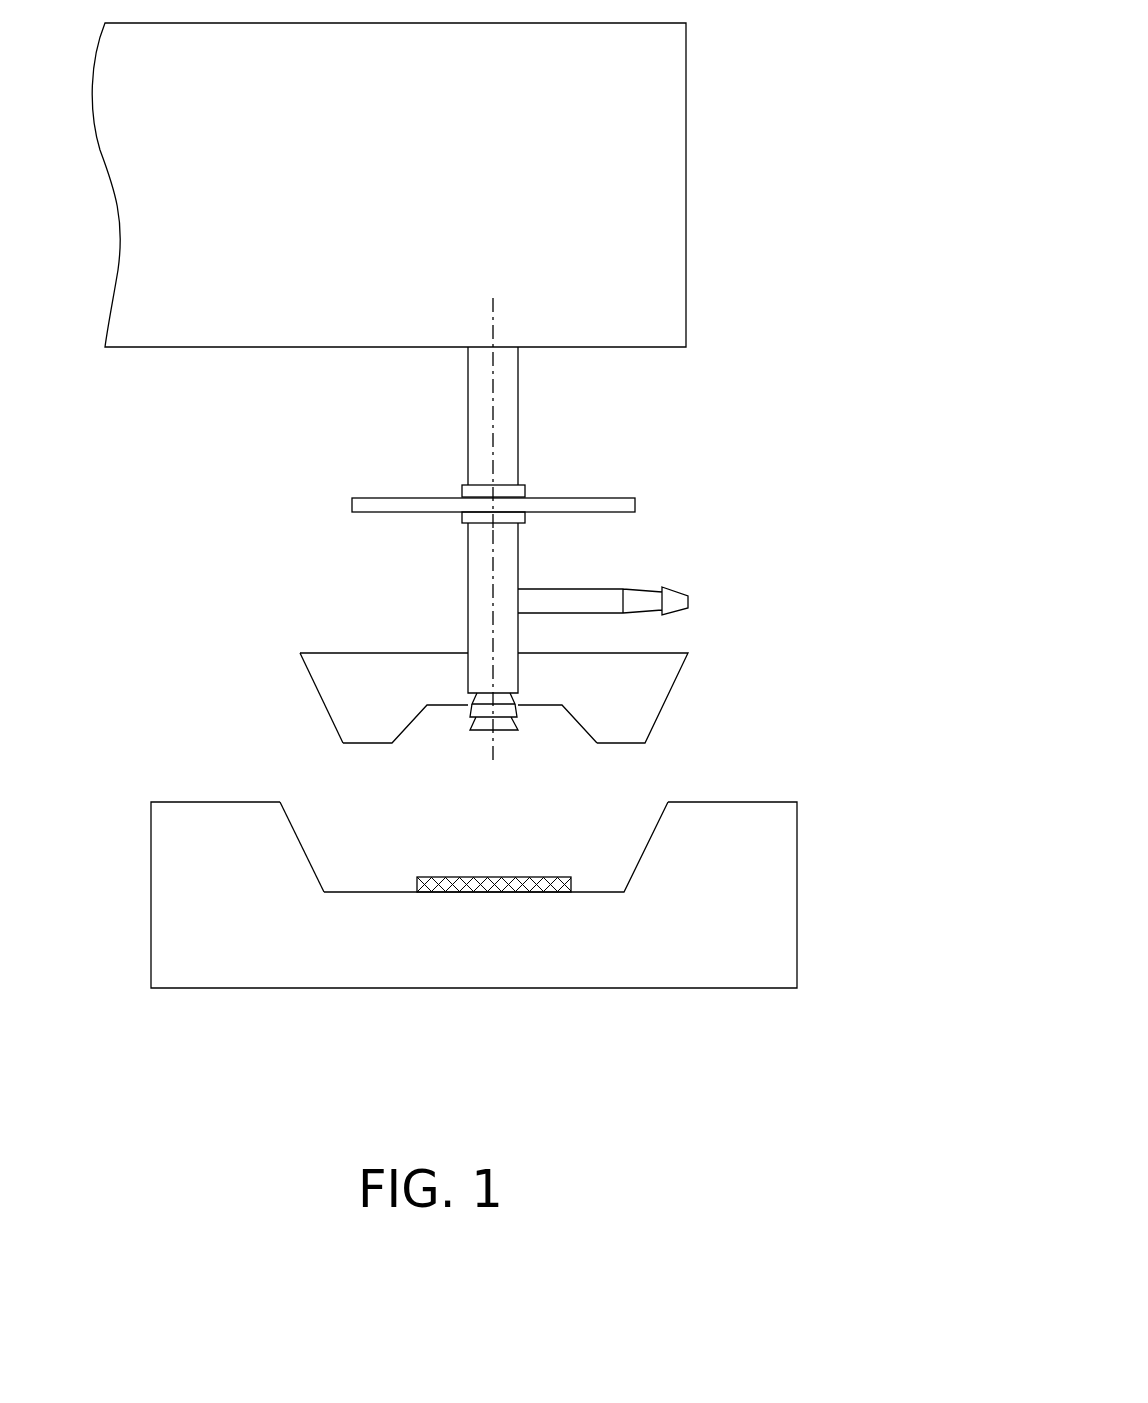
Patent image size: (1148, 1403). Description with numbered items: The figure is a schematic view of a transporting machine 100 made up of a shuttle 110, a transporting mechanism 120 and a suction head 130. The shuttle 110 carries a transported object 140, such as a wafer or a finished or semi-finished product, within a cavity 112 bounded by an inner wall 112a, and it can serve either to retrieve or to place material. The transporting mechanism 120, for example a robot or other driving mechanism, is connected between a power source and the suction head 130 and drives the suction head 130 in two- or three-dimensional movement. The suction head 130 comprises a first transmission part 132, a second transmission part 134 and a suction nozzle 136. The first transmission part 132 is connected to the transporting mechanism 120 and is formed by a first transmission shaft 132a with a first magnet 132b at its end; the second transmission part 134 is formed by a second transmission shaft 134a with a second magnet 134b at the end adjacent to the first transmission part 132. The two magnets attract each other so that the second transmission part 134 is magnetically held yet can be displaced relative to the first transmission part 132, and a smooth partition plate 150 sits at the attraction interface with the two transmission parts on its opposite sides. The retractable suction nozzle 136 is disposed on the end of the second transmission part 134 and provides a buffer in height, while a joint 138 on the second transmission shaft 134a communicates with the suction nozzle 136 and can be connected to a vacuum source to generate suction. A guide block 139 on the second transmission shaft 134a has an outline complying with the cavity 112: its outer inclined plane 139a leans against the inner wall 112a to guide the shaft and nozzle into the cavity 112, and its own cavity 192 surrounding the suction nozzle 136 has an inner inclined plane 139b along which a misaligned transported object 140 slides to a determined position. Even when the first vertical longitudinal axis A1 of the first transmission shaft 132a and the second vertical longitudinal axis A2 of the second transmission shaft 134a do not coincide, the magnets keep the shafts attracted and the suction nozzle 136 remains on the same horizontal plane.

The transporting machine 100 is at (850, 1108).
The shuttle 110 is at (529, 850).
The cavity 112 is at (548, 802).
The inner wall 112a is at (319, 856).
The transporting mechanism 120 is at (686, 168).
The suction head 130 is at (521, 577).
The first transmission part 132 is at (593, 422).
The first transmission shaft 132a is at (512, 405).
The first magnet 132b is at (520, 492).
The second transmission part 134 is at (595, 599).
The second transmission shaft 134a is at (514, 571).
The second magnet 134b is at (526, 517).
The suction nozzle 136 is at (620, 699).
The joint 138 is at (676, 598).
The guide block 139 is at (478, 716).
The outer inclined plane 139a is at (306, 713).
The inner inclined plane 139b is at (418, 745).
The transported object 140 is at (462, 877).
The partition plate 150 is at (352, 503).
The cavity 192 is at (558, 734).
The first vertical longitudinal axis A1 is at (493, 322).
The second vertical longitudinal axis A2 is at (493, 596).